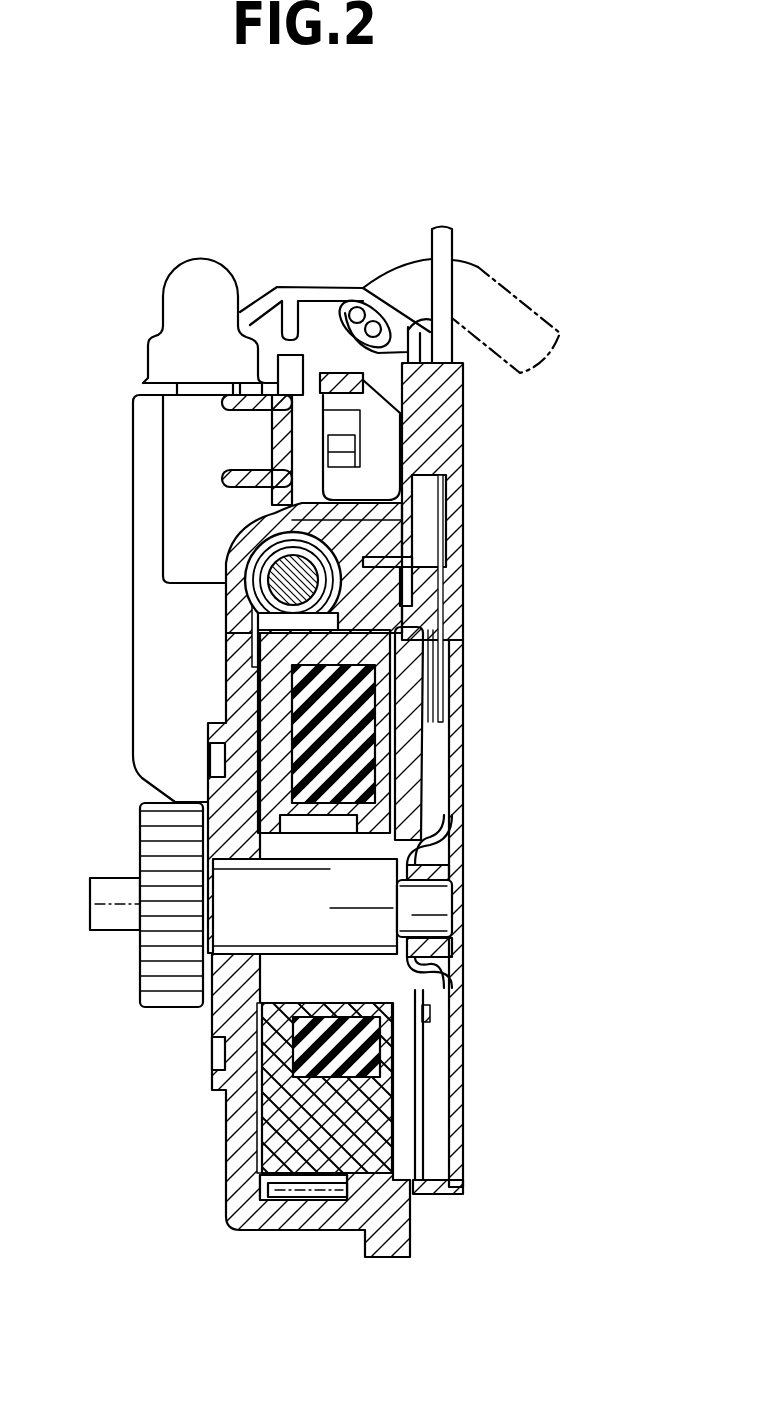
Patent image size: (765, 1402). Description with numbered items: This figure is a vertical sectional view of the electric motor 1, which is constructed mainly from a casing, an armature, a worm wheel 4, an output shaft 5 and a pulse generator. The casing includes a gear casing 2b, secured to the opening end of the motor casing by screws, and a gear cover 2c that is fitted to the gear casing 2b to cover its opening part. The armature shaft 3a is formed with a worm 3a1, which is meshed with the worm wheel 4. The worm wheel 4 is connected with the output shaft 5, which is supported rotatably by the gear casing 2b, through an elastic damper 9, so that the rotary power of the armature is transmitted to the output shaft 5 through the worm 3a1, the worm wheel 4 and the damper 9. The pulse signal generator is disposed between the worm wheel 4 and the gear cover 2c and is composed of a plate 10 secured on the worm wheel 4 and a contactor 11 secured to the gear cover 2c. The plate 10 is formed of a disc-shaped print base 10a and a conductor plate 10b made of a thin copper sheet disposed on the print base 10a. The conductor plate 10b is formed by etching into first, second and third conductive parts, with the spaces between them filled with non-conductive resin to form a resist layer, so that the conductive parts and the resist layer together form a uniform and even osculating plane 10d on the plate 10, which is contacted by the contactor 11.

The electric motor 1 is at (240, 134).
The gear casing 2b is at (243, 1193).
The gear cover 2c is at (453, 592).
The armature shaft 3a is at (281, 592).
The worm 3a1 is at (258, 568).
The worm wheel 4 is at (317, 1192).
The output shaft 5 is at (247, 933).
The elastic damper 9 is at (313, 1057).
The plate 10 is at (422, 1192).
The print base 10a is at (420, 1105).
The conductor plate 10b is at (420, 1048).
The osculating plane 10d is at (436, 758).
The contactor 11 is at (436, 695).